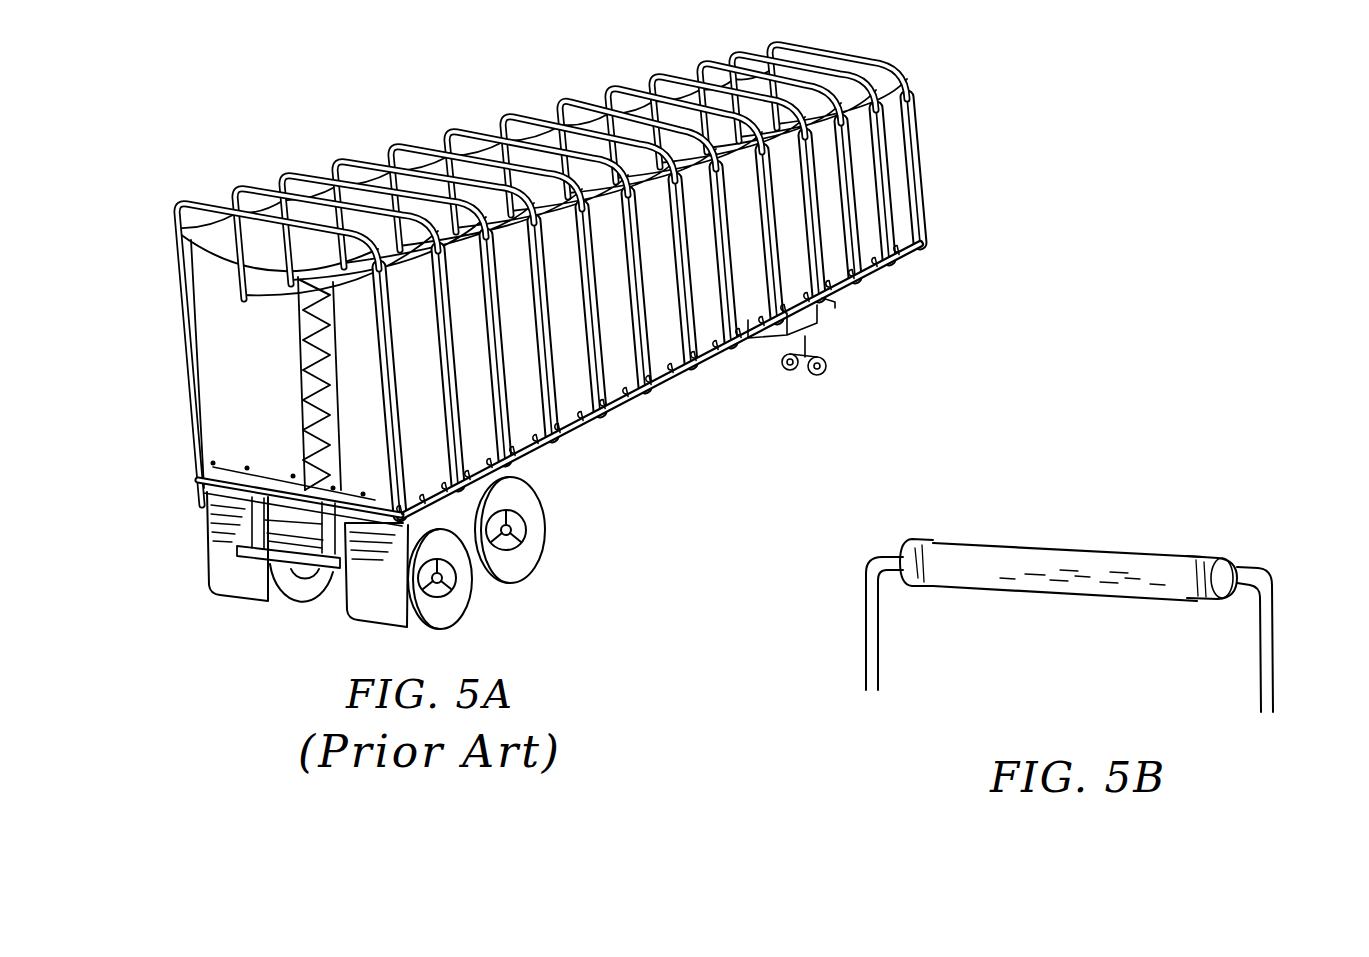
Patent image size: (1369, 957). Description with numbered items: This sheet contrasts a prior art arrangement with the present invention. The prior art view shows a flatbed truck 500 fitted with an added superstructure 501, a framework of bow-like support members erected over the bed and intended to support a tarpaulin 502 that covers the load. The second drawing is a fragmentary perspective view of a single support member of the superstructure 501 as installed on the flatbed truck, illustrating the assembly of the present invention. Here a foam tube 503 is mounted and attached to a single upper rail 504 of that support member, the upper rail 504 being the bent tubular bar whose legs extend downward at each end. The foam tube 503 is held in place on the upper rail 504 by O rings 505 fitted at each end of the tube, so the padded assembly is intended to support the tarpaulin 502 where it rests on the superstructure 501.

In FIG. 5A, the flatbed truck 500 is at (651, 384).
In FIG. 5A, the superstructure 501 is at (463, 120).
In FIG. 5A, the tarpaulin 502 is at (546, 420).
In FIG. 5B, the foam tube 503 is at (1057, 593).
In FIG. 5B, the upper rail 504 is at (860, 647).
In FIG. 5B, the O rings 505 is at (933, 543).